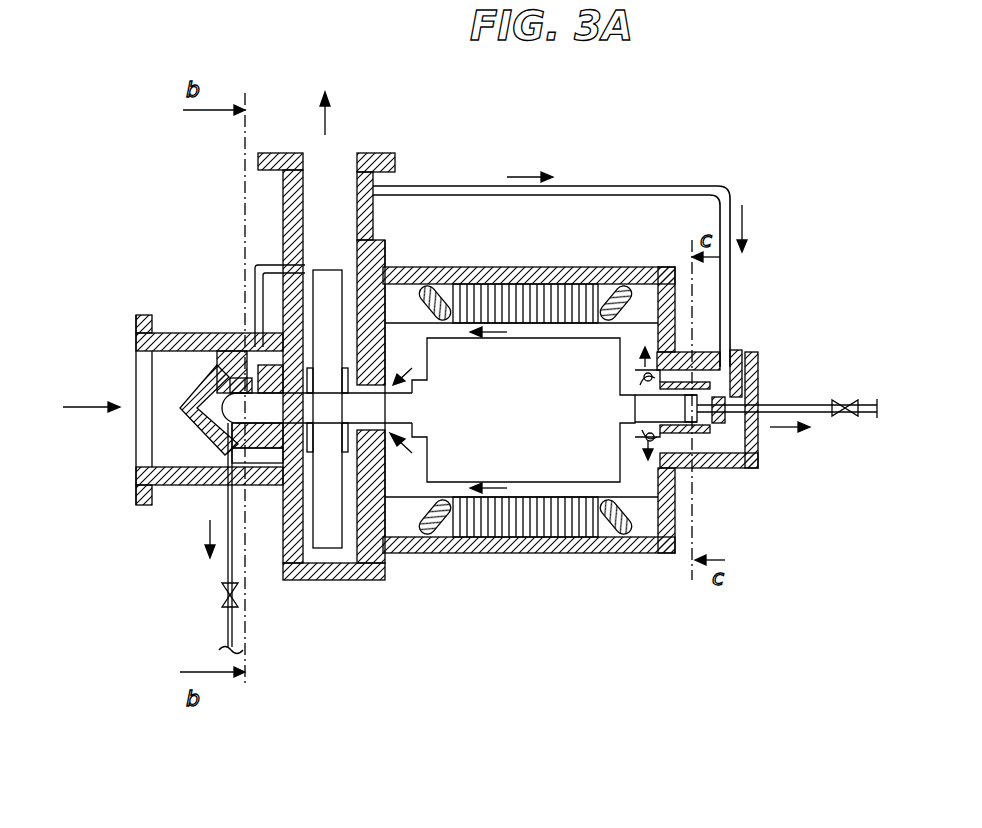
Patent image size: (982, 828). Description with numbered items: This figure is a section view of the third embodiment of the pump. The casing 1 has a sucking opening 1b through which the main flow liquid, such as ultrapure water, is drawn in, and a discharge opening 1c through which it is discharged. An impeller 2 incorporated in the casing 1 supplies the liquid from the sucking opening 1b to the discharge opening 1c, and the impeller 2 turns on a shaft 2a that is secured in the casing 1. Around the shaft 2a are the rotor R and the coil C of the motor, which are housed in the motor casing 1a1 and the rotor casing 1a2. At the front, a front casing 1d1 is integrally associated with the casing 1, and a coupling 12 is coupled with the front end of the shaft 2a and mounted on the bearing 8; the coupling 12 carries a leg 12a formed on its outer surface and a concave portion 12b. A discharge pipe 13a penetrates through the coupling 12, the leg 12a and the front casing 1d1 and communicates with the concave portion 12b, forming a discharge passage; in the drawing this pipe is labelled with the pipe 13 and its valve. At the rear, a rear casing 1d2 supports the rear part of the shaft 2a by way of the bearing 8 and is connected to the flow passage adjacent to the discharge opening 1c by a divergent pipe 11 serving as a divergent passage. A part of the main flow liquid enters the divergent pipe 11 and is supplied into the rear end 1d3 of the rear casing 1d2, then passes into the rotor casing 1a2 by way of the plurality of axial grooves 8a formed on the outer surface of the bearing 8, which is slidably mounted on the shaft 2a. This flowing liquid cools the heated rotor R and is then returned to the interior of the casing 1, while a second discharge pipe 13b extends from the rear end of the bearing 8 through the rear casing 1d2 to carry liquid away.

The casing 1 is at (383, 153).
The motor casing 1a1 is at (478, 557).
The rotor casing 1a2 is at (410, 557).
The sucking opening 1b is at (130, 422).
The discharge opening 1c is at (333, 152).
The front casing 1d1 is at (163, 330).
The rear casing 1d2 is at (760, 450).
The rear end of the rear casing 1d3 is at (760, 392).
The impeller 2 is at (328, 537).
The shaft 2a is at (270, 497).
The bearing 8 is at (230, 328).
The grooves 8a is at (705, 345).
The divergent pipe 11 is at (616, 186).
The coupling 12 is at (197, 420).
The leg 12a is at (217, 332).
The concave portion 12b is at (187, 477).
The liquid pipe 13 is at (258, 265).
The discharge pipe 13a is at (227, 622).
The discharge pipe 13b is at (818, 418).
The rotor R is at (528, 455).
The coil C is at (575, 533).